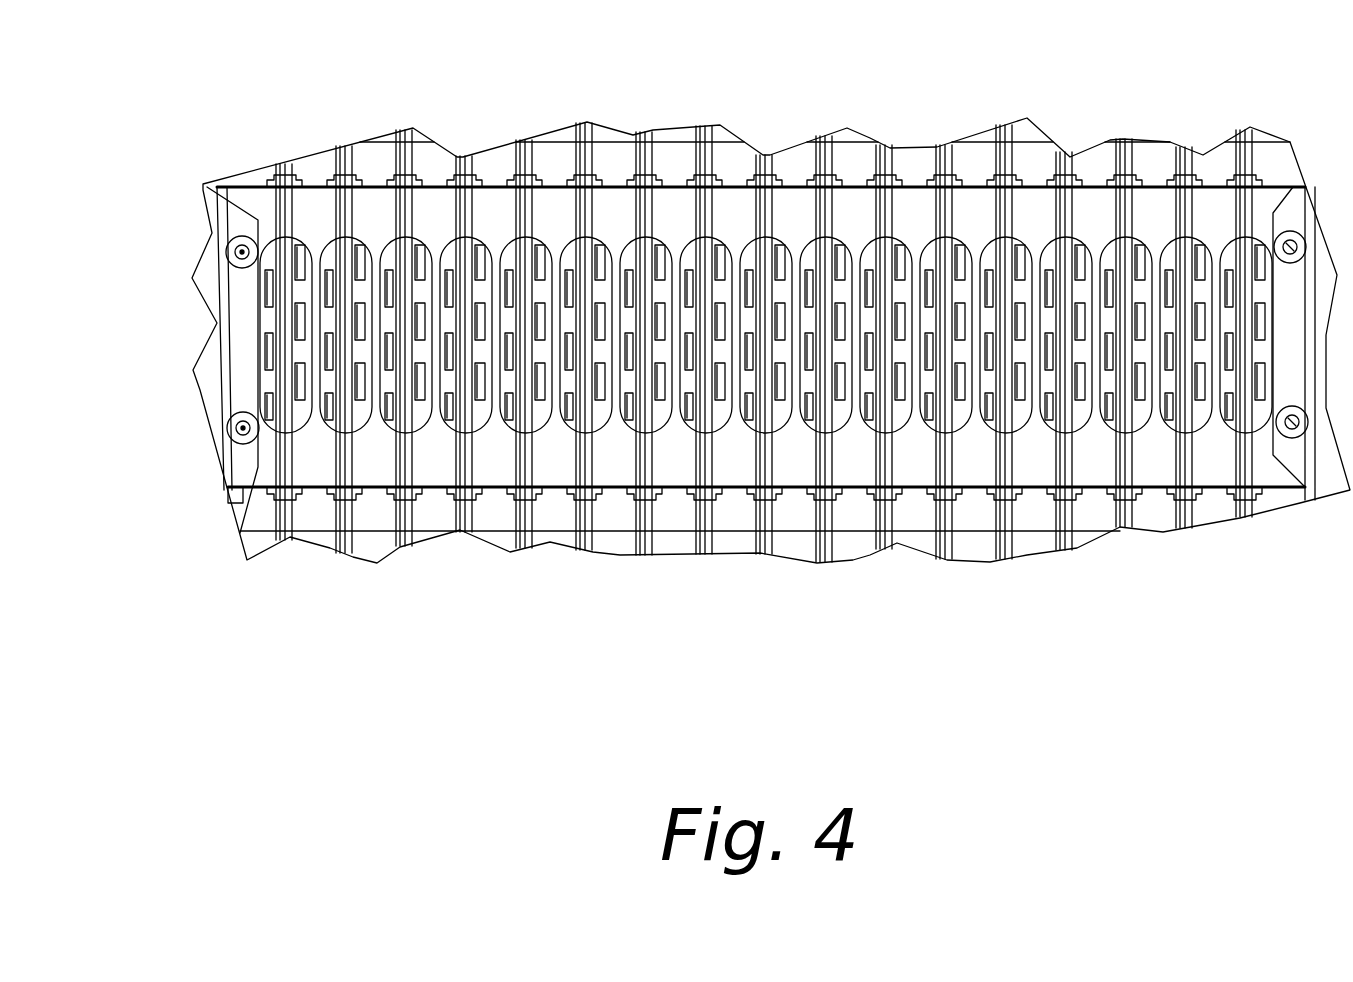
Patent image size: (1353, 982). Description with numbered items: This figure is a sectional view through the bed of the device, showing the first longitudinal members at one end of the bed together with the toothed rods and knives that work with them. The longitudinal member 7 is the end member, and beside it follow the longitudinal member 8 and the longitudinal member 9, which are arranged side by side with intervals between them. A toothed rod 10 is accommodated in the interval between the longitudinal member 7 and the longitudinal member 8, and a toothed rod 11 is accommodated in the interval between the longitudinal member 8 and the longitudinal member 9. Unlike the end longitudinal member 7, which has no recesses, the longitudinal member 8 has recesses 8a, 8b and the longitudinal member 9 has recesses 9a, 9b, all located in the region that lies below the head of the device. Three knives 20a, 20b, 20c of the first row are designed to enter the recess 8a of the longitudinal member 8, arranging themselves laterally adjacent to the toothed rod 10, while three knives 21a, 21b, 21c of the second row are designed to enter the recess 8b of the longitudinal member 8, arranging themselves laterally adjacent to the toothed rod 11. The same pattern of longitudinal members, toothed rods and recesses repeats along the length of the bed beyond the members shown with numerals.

The longitudinal member 7 is at (265, 210).
The longitudinal member 8 is at (313, 217).
The longitudinal member 9 is at (375, 215).
The toothed rod 10 is at (288, 207).
The toothed rod 11 is at (348, 207).
The knife 20a is at (297, 383).
The knife 20b is at (292, 322).
The knife 20c is at (257, 225).
The knife 21a is at (333, 407).
The knife 21b is at (333, 353).
The knife 21c is at (333, 290).
The recess 8a is at (305, 535).
The recess 8b is at (331, 448).
The recess 9a is at (372, 445).
The recess 9b is at (383, 430).